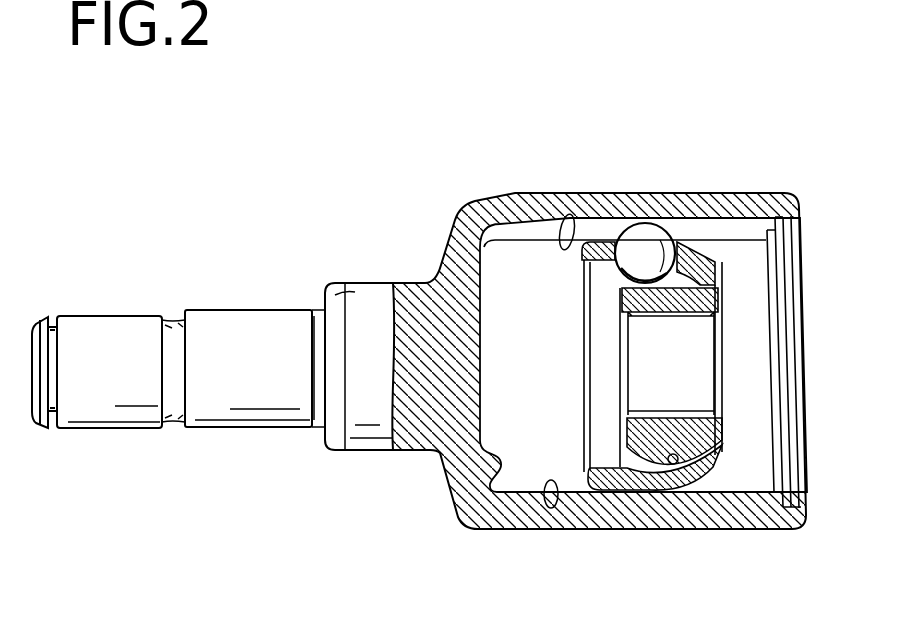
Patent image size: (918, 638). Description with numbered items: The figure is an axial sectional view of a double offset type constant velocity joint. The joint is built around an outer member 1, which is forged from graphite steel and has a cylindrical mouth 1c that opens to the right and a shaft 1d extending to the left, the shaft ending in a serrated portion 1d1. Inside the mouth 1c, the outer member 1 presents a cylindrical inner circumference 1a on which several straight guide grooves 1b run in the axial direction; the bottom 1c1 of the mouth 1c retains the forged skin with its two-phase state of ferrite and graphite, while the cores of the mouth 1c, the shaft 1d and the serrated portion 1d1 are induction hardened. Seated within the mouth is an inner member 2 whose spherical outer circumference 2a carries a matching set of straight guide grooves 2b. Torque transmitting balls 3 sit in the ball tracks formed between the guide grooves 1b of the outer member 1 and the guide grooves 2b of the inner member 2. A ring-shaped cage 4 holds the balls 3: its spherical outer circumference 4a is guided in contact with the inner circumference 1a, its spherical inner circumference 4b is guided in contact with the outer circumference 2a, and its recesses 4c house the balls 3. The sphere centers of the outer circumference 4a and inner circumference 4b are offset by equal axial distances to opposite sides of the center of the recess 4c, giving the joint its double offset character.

The outer member 1 is at (497, 199).
The cylindrical inner circumference 1a is at (551, 508).
The straight guide grooves 1b is at (565, 214).
The cylindrical mouth 1c is at (661, 218).
The bottom of the mouth 1c1 is at (490, 463).
The shaft 1d is at (262, 308).
The serrated portion 1d1 is at (115, 314).
The inner member 2 is at (697, 288).
The spherical outer circumference 2a is at (703, 467).
The straight guide grooves 2b is at (717, 285).
The torque transmitting balls 3 is at (632, 242).
The cage 4 is at (688, 228).
The outer circumference 4a is at (590, 488).
The inner circumference 4b is at (676, 464).
The recesses 4c is at (593, 245).